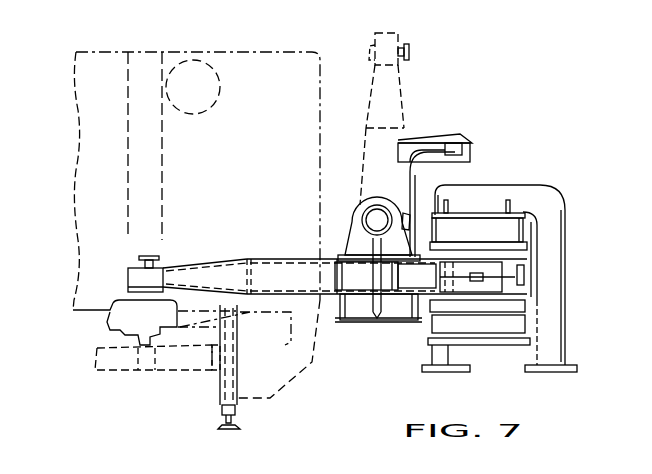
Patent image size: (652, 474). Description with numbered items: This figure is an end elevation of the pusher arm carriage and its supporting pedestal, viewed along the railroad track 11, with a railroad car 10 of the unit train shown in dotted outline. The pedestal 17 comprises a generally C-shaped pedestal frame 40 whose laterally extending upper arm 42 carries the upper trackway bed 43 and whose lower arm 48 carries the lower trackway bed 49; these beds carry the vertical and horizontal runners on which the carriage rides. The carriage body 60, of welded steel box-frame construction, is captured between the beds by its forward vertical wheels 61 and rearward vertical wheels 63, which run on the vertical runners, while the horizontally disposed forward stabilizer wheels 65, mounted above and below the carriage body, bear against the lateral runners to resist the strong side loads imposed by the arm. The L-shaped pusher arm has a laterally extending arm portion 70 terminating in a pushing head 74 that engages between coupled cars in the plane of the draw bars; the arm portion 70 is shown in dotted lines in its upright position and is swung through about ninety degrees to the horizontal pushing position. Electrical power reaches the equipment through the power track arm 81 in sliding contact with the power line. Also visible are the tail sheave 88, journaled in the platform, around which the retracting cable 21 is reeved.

The railroad car 10 is at (252, 70).
The track 11 is at (240, 421).
The pedestal 17 is at (491, 187).
The retracting cable 21 is at (378, 318).
The pedestal frame 40 is at (555, 283).
The upper arm 42 is at (466, 200).
The upper trackway bed 43 is at (500, 187).
The lower arm 48 is at (495, 360).
The lower trackway bed 49 is at (460, 322).
The carriage body 60 is at (490, 267).
The forward vertical wheel 61 is at (512, 264).
The rearward vertical wheel 63 is at (460, 305).
The forward stabilizer wheel 65 is at (487, 230).
The laterally extending arm portion 70 is at (398, 106).
The pushing head 74 is at (400, 35).
The power track arm 81 is at (435, 138).
The tail sheave 88 is at (370, 300).